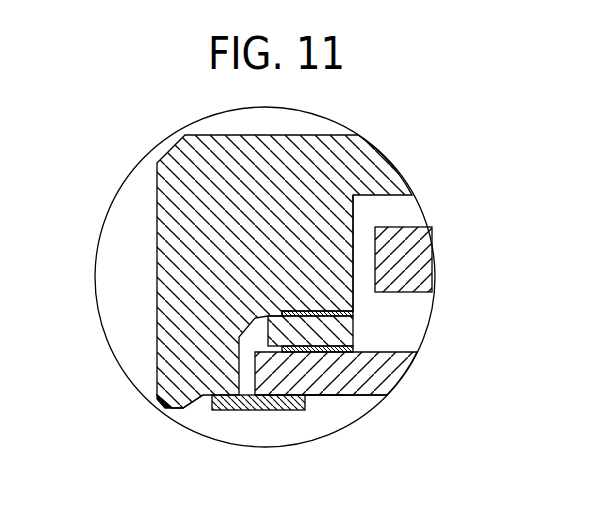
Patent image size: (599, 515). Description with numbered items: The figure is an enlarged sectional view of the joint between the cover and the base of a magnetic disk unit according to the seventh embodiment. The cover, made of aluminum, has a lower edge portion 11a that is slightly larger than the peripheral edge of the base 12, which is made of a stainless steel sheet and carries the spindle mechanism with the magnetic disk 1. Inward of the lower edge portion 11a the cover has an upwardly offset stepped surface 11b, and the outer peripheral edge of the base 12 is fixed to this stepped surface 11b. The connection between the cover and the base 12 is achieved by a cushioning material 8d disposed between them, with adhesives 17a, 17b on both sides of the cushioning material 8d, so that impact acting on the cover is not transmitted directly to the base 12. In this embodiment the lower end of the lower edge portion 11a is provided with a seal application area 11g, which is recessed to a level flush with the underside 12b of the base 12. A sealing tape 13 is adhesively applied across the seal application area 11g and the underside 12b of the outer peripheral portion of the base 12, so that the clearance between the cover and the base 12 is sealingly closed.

The magnetic disk 1 is at (412, 260).
The cushioning material 8d is at (327, 311).
The lower edge portion 11a is at (205, 296).
The stepped surface 11b is at (350, 298).
The seal application area 11g is at (205, 396).
The base 12 is at (348, 395).
The underside of the base 12b is at (323, 395).
The sealing tape 13 is at (245, 410).
The adhesive 17a is at (353, 330).
The adhesive 17b is at (360, 367).